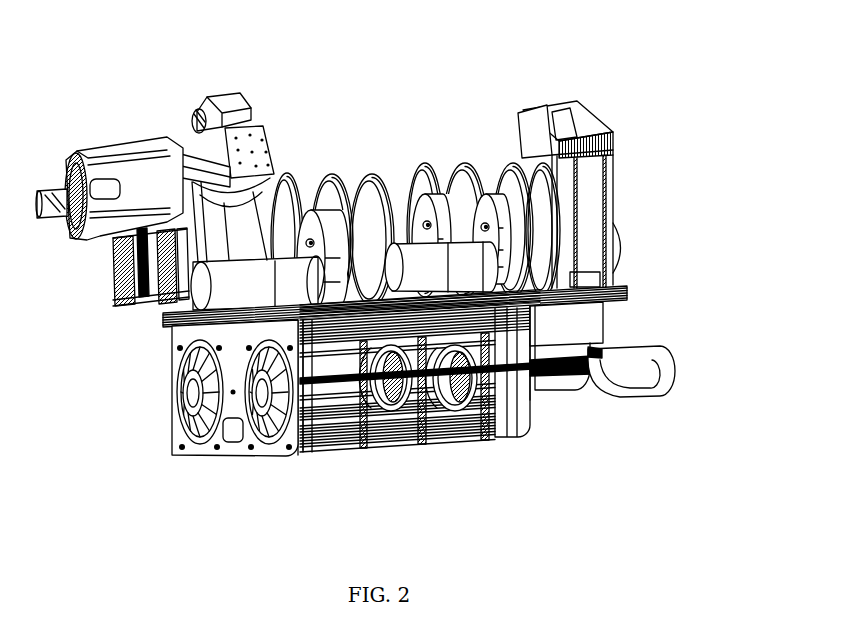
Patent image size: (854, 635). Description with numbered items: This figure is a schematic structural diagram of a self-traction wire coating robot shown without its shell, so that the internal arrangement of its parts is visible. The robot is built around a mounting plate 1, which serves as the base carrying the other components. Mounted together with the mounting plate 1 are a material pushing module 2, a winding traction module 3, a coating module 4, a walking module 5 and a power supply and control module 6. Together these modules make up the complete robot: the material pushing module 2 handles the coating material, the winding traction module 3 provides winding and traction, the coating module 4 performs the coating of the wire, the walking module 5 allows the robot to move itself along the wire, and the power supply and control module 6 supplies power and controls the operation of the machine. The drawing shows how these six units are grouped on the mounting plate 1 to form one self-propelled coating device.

The mounting plate 1 is at (425, 440).
The material pushing module 2 is at (360, 400).
The winding traction module 3 is at (255, 337).
The coating module 4 is at (140, 237).
The walking module 5 is at (238, 213).
The power supply and control module 6 is at (575, 327).